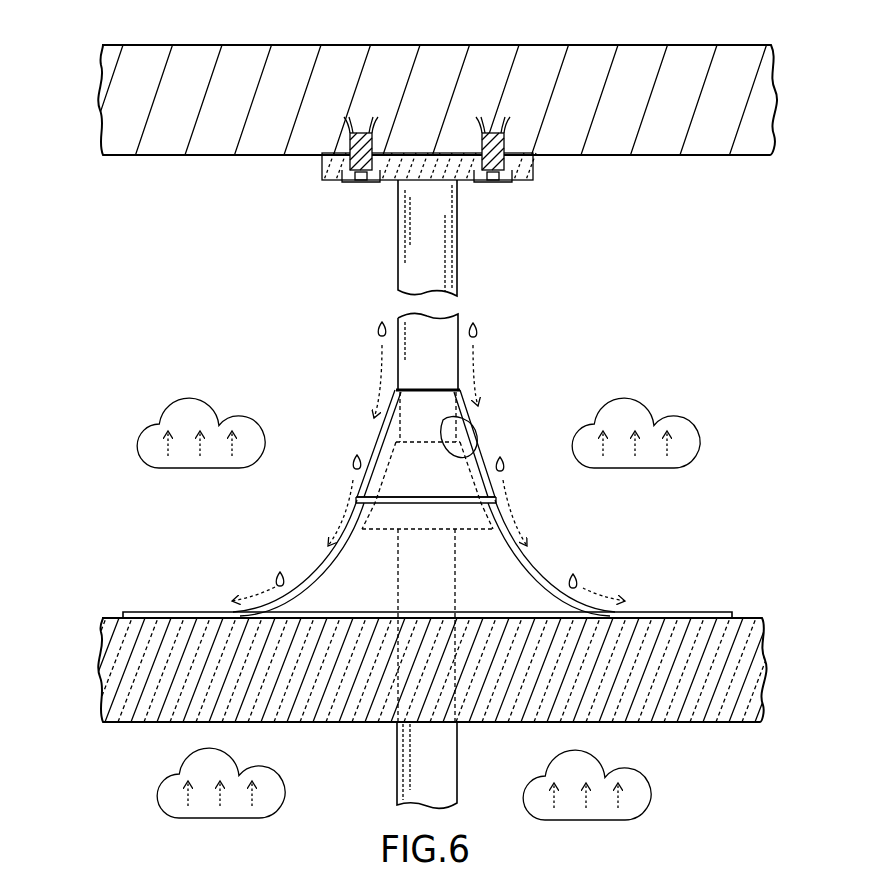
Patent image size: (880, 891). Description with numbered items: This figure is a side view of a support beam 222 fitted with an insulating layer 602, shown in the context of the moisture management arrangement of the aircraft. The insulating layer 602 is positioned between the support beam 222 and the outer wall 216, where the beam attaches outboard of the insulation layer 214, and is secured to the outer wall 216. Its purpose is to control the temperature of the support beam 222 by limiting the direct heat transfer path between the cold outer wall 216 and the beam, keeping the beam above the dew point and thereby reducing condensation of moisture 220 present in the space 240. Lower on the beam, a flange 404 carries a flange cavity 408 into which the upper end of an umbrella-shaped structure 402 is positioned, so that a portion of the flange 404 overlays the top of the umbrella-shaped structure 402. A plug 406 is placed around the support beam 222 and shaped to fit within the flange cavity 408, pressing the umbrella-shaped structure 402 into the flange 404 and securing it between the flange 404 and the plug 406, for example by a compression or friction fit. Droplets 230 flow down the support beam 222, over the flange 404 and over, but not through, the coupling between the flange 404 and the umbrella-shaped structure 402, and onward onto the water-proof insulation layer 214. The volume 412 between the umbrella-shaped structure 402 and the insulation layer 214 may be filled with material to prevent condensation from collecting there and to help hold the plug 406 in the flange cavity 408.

The outer wall 216 is at (330, 44).
The insulating layer 602 is at (322, 170).
The support beam 222 is at (415, 224).
The space 240 is at (233, 316).
The droplets 230 is at (378, 333).
The flange 404 is at (382, 440).
The plug 406 is at (467, 453).
The flange cavity 408 is at (462, 432).
The umbrella-shaped structure 402 is at (317, 573).
The volume 412 is at (520, 598).
The insulation layer 214 is at (753, 628).
The moisture 220 is at (272, 421).